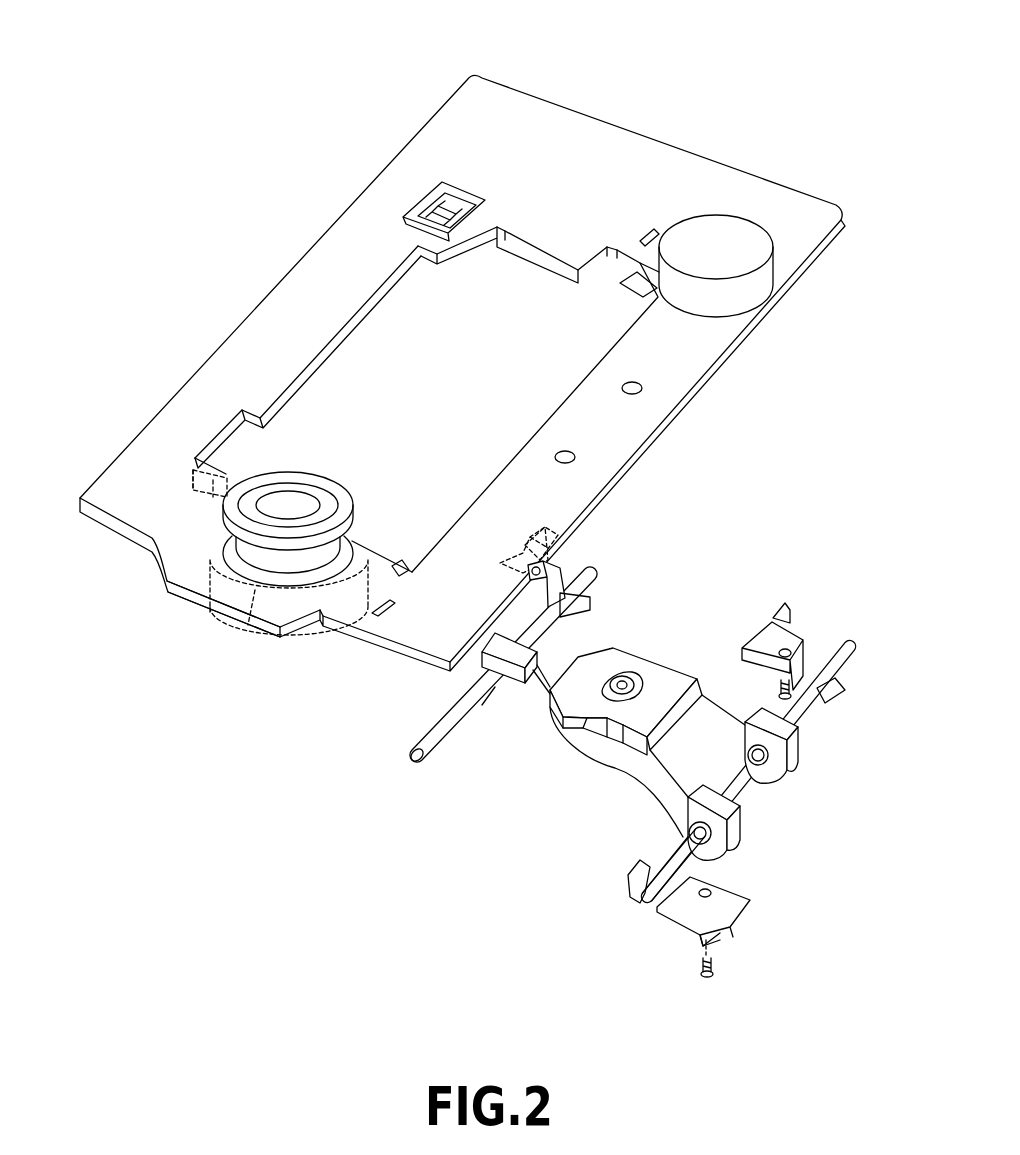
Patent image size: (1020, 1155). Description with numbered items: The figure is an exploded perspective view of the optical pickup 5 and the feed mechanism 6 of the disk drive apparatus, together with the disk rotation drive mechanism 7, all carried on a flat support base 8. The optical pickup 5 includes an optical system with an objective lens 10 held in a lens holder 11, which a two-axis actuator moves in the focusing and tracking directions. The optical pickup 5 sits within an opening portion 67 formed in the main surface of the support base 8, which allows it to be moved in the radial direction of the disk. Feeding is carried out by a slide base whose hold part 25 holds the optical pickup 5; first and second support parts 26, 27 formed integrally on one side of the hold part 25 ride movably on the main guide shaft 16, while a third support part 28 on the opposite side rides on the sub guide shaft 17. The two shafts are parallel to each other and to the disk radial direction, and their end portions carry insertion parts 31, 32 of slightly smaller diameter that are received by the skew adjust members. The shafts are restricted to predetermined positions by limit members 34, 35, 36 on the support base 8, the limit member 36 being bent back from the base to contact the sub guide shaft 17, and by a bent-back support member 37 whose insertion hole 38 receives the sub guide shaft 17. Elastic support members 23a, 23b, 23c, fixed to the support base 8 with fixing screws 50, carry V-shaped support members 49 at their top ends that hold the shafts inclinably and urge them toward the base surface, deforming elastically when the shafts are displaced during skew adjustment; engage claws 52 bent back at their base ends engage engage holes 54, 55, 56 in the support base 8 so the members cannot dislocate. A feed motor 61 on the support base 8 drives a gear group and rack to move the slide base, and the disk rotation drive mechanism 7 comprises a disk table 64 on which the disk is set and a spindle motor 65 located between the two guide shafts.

The optical pickup 5 is at (600, 643).
The feed mechanism 6 is at (820, 204).
The disk rotation drive mechanism 7 is at (151, 603).
The support base 8 is at (680, 370).
The objective lens 10 is at (625, 675).
The lens holder 11 is at (637, 670).
The main guide shaft 16 is at (675, 857).
The sub guide shaft 17 is at (445, 735).
The elastic support member 23a is at (687, 910).
The elastic support member 23b is at (767, 648).
The elastic support member 23c is at (527, 557).
The hold part 25 is at (657, 787).
The first support part 26 is at (743, 840).
The second support part 27 is at (803, 760).
The third support part 28 is at (497, 645).
The insertion part 31 is at (842, 635).
The insertion part 32 is at (590, 575).
The limit member 34 is at (395, 566).
The limit member 35 is at (631, 280).
The limit member 36 is at (457, 190).
The support member 37 is at (193, 465).
The insertion hole 38 is at (217, 470).
The support member 49 is at (590, 603).
The fixing screw 50 is at (778, 703).
The engage claw 52 is at (543, 527).
The engage hole 54 is at (392, 612).
The engage hole 55 is at (660, 228).
The engage hole 56 is at (420, 204).
The feed motor 61 is at (745, 247).
The disk table 64 is at (325, 473).
The spindle motor 65 is at (257, 620).
The opening portion 67 is at (520, 269).